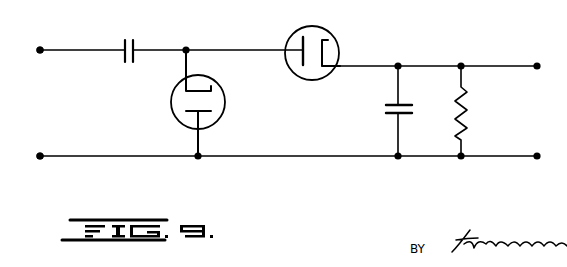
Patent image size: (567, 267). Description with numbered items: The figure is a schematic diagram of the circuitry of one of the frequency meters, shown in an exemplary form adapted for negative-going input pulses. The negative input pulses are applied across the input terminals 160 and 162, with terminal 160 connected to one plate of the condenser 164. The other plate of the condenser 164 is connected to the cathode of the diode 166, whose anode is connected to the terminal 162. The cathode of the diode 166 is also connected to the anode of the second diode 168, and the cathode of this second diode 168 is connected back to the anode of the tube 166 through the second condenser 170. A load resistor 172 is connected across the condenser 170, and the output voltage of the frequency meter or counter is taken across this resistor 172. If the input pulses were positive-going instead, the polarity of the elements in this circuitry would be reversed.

The input terminal 160 is at (40, 47).
The input terminal 162 is at (42, 159).
The condenser 164 is at (138, 32).
The diode 166 is at (221, 87).
The second diode 168 is at (325, 27).
The second condenser 170 is at (392, 113).
The load resistor 172 is at (468, 118).